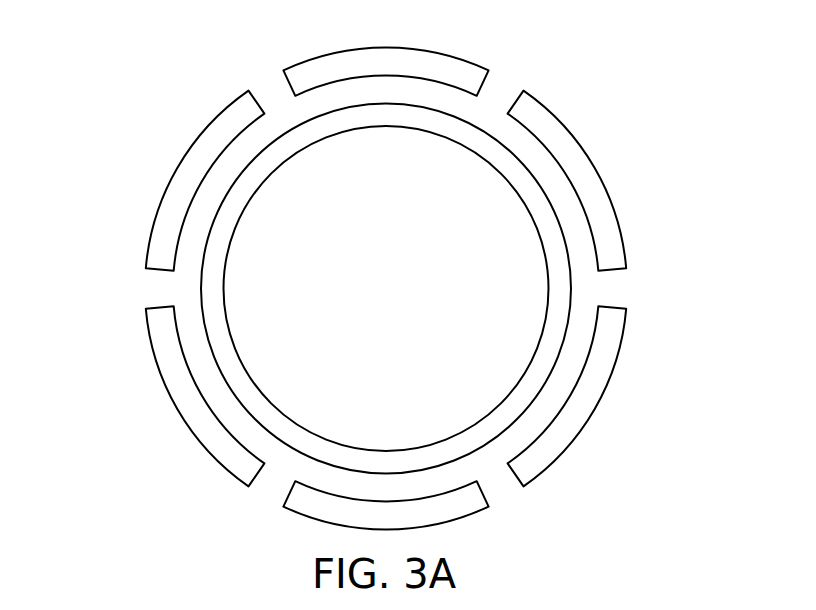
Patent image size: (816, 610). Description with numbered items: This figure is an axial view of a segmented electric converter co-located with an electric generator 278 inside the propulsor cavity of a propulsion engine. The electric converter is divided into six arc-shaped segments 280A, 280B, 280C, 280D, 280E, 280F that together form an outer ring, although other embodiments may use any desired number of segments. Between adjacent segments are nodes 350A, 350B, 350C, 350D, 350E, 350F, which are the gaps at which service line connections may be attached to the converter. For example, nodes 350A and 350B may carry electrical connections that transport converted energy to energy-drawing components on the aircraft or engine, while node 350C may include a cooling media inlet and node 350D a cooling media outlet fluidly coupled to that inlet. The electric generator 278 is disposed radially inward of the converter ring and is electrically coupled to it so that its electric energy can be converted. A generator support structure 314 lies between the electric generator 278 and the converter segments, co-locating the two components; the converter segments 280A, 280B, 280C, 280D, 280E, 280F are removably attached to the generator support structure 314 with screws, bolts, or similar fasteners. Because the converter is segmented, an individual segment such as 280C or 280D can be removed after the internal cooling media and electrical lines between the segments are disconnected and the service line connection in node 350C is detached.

The electric generator 278 is at (262, 185).
The generator support structure 314 is at (557, 197).
The electric converter segment 280A is at (160, 365).
The electric converter segment 280B is at (197, 150).
The electric converter segment 280C is at (458, 72).
The electric converter segment 280D is at (593, 173).
The electric converter segment 280E is at (608, 365).
The electric converter segment 280F is at (475, 508).
The node 350A is at (140, 292).
The node 350B is at (264, 72).
The node 350C is at (520, 66).
The node 350D is at (637, 290).
The node 350E is at (518, 505).
The node 350F is at (266, 502).